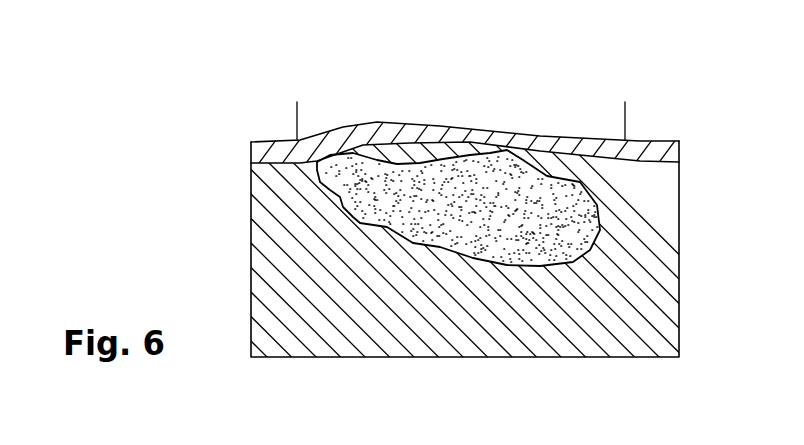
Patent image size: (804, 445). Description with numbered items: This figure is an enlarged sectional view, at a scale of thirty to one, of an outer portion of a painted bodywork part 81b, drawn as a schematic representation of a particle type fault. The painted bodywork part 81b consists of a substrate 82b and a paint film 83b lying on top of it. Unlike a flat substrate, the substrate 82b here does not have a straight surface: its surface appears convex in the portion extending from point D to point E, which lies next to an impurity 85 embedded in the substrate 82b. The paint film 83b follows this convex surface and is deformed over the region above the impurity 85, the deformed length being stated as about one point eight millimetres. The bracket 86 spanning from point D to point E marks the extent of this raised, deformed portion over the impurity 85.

The painted bodywork part 81b is at (188, 237).
The substrate 82b is at (680, 240).
The paint film 83b is at (680, 157).
The impurity 85 is at (560, 240).
The width between D and E 86 is at (622, 72).